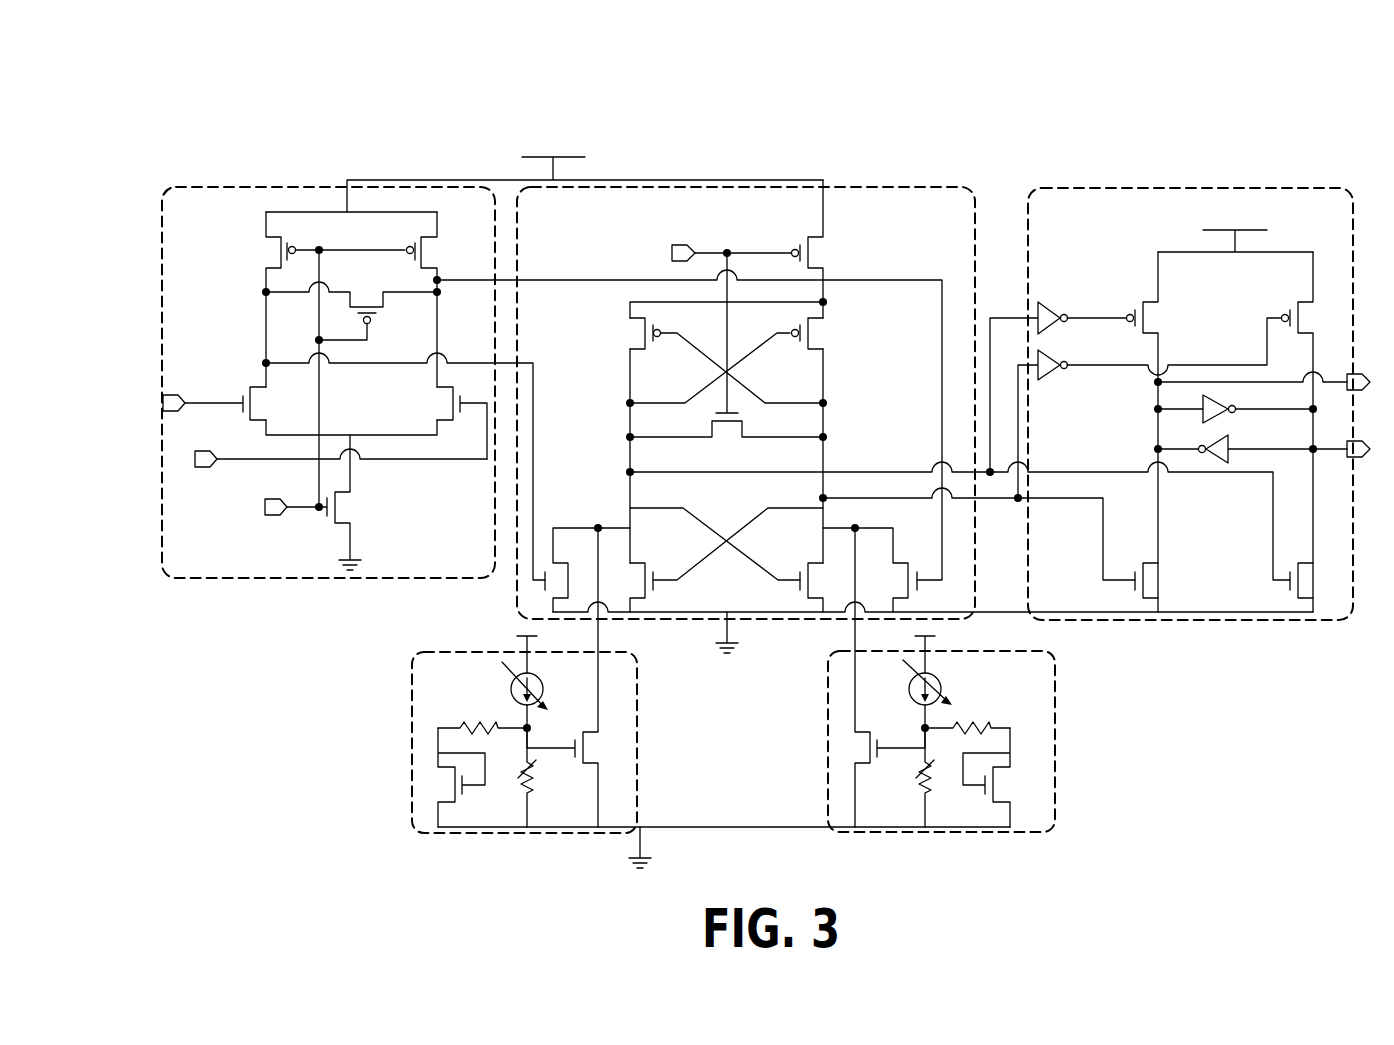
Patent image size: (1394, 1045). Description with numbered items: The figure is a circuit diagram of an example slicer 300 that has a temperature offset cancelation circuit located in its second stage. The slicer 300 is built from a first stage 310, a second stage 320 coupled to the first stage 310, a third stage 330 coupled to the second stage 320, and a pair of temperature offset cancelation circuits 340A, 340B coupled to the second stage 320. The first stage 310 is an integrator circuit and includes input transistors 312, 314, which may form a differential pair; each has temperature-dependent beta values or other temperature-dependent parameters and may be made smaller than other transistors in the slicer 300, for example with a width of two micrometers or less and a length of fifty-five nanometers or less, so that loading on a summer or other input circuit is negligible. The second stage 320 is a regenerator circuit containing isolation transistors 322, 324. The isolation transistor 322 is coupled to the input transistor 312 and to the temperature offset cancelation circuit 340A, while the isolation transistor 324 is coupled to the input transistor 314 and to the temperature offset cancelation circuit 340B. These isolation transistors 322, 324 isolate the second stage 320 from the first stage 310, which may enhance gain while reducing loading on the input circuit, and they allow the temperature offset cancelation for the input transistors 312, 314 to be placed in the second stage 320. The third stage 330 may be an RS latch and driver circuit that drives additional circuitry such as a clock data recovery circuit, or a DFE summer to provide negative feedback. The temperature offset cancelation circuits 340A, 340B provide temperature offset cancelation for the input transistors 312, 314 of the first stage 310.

The slicer 300 is at (204, 88).
The first stage 310 is at (213, 187).
The input transistor 312 is at (257, 388).
The input transistor 314 is at (443, 422).
The second stage 320 is at (923, 187).
The isolation transistor 322 is at (553, 563).
The isolation transistor 324 is at (909, 598).
The third stage 330 is at (1178, 188).
The temperature offset cancelation circuit 340A is at (412, 727).
The temperature offset cancelation circuit 340B is at (1055, 738).